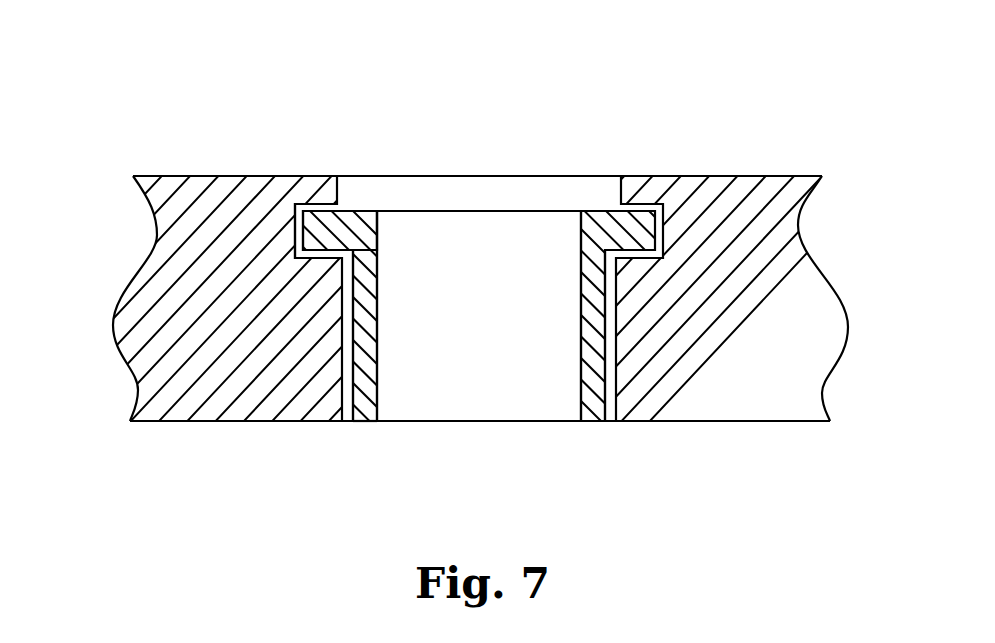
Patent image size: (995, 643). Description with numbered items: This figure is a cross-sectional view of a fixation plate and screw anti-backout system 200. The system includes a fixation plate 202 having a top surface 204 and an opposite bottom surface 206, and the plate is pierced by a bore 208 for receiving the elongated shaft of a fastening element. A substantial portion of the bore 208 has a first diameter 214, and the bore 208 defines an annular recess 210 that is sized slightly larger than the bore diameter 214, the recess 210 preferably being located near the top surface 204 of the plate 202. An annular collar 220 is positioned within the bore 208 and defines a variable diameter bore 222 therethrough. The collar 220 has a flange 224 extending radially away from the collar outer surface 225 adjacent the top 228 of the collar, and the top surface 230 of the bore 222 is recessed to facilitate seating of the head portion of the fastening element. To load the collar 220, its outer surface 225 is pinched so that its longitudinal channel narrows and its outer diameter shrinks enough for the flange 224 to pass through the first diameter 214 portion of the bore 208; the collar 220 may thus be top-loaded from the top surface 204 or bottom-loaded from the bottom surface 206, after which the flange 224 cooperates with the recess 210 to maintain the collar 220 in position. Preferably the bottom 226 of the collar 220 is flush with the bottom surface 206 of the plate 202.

The fixation plate and screw anti-backout system 200 is at (776, 118).
The fixation plate 202 is at (114, 353).
The top surface 204 is at (205, 176).
The bottom surface 206 is at (217, 421).
The bore 208 is at (512, 176).
The annular recess 210 is at (294, 220).
The first diameter 214 is at (633, 313).
The annular collar 220 is at (593, 421).
The variable diameter bore 222 is at (480, 346).
The flange 224 is at (297, 238).
The collar outer surface 225 is at (348, 333).
The bottom of collar 226 is at (367, 421).
The top of collar 228 is at (346, 207).
The top surface of bore 222 230 is at (375, 225).